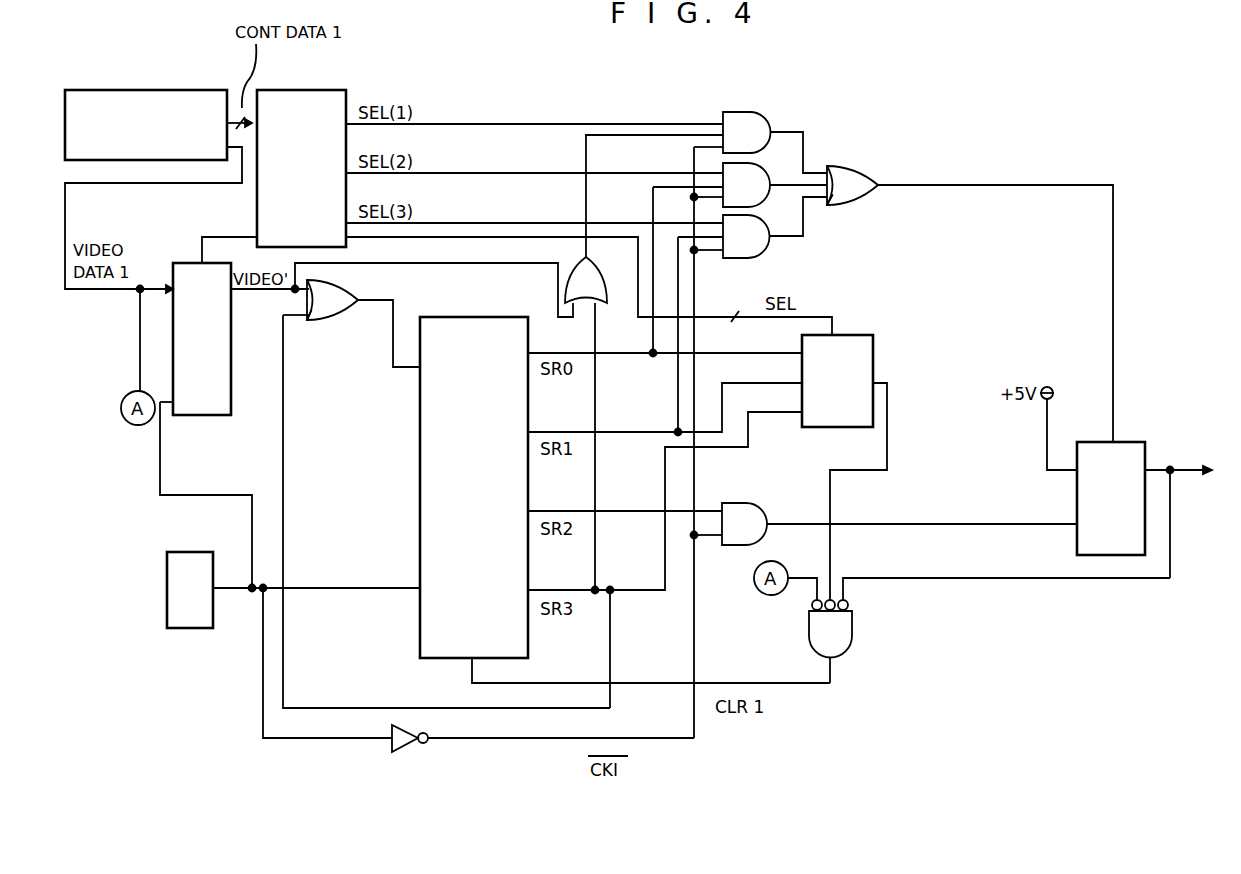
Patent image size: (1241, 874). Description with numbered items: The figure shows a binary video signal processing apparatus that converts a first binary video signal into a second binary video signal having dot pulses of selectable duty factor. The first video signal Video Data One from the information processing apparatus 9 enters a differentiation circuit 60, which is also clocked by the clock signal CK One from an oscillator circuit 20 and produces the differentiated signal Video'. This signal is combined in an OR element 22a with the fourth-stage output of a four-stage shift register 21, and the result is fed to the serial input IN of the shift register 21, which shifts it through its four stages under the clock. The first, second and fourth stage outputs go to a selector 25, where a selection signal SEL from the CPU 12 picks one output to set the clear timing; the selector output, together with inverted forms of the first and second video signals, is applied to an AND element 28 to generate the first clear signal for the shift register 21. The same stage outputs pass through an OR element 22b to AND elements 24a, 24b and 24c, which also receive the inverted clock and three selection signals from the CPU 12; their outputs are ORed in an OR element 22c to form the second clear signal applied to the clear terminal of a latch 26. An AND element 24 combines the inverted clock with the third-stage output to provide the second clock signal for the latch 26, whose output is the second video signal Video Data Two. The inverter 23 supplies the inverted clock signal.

The information processing apparatus 9 is at (172, 88).
The CPU 12 is at (301, 148).
The differentiation circuit 60 is at (210, 415).
The OR element 22a is at (333, 320).
The OR element 22b is at (606, 298).
The OR element 22c is at (870, 200).
The four-stage shift register 21 is at (420, 516).
The AND element 24a is at (778, 160).
The AND element 24b is at (769, 246).
The AND element 24c is at (748, 112).
The AND element 24 is at (730, 545).
The selector 25 is at (860, 335).
The latch 26 is at (1105, 555).
The AND element 28 is at (853, 640).
The oscillator circuit 20 is at (186, 628).
The inverter 23 is at (405, 752).